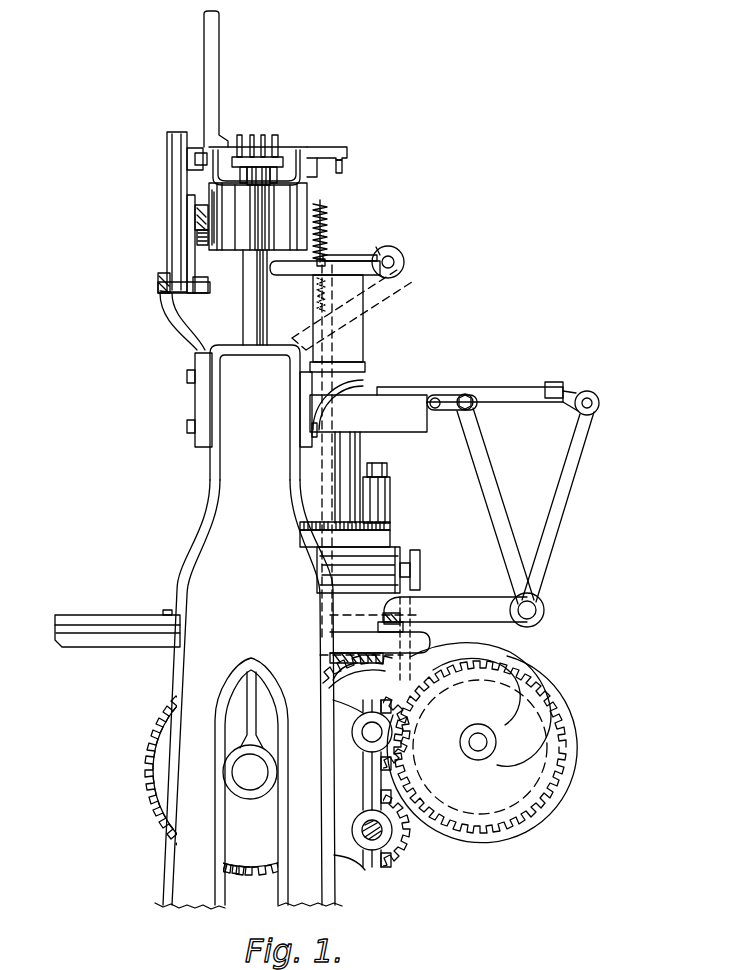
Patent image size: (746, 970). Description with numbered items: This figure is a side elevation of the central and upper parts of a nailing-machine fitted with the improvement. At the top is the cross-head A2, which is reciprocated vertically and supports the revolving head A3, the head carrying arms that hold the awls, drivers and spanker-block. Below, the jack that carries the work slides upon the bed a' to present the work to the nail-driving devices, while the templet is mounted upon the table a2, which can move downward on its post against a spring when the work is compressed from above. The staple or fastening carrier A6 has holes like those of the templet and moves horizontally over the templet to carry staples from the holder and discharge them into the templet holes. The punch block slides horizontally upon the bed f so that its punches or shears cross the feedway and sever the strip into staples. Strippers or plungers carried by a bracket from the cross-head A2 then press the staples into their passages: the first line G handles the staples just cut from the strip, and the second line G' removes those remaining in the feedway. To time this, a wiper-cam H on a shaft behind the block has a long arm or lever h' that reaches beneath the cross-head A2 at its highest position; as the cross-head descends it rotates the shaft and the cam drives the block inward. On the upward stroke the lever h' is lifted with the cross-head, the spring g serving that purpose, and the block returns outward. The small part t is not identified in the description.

The revolving head A3 is at (283, 157).
The strippers or plungers G is at (329, 149).
The strippers G' is at (359, 155).
The cross-head A2 is at (285, 200).
The spring g is at (324, 228).
The stud t is at (328, 259).
The wiper-cam H is at (397, 254).
The arm or lever h' is at (325, 278).
The staple or fastening carrier A6 is at (364, 392).
The table a2 is at (330, 477).
The bed a' is at (117, 618).
The bed f is at (371, 638).